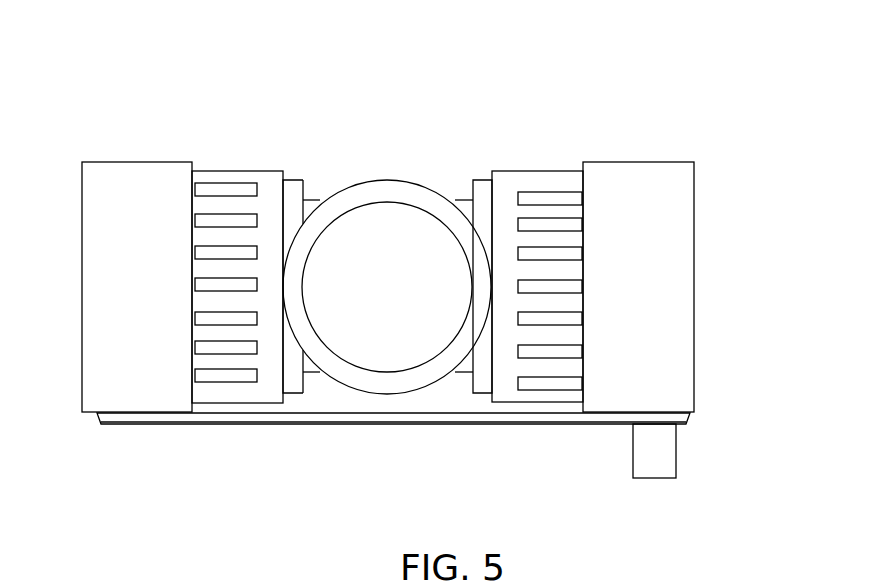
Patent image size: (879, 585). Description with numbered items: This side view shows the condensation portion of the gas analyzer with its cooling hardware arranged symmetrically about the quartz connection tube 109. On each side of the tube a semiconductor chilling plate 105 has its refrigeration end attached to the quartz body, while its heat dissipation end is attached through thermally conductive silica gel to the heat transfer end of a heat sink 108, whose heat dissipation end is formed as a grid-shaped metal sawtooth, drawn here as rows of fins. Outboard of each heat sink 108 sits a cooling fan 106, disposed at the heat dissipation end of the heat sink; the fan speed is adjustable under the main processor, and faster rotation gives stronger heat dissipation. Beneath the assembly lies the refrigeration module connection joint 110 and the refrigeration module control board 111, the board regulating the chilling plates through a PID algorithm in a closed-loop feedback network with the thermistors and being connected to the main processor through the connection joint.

The semiconductor chilling plate 105 is at (370, 211).
The cooling fan 106 is at (708, 234).
The heat sink 108 is at (162, 228).
The quartz connection tube 109 is at (443, 212).
The refrigeration module connection joint 110 is at (352, 445).
The refrigeration module control board 111 is at (588, 466).